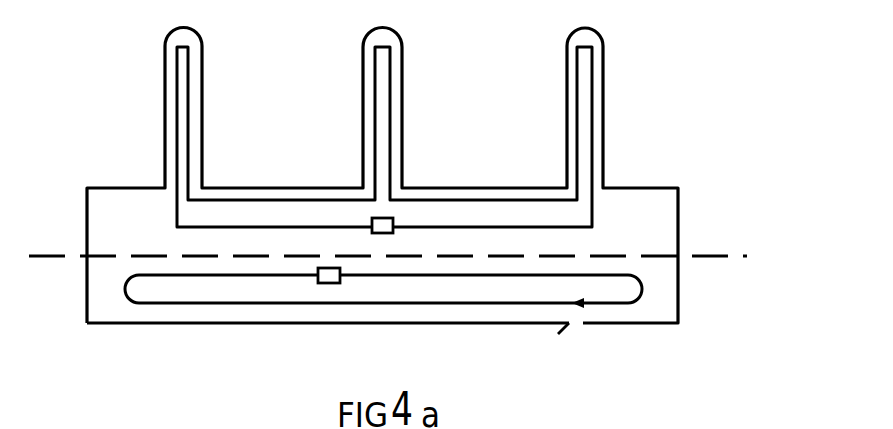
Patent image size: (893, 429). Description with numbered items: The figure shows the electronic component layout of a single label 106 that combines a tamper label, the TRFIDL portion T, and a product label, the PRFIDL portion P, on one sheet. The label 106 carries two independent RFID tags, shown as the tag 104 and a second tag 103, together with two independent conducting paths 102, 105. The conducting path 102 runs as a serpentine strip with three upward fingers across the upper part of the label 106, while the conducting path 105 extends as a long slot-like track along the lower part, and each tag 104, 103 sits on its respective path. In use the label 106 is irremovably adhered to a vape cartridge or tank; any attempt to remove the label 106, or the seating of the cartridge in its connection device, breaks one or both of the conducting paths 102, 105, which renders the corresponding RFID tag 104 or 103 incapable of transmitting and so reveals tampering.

The independent conducting path 102 is at (440, 197).
The feed point element 103 is at (382, 233).
The independent RFID tag 104 is at (327, 268).
The independent conducting path 105 is at (418, 302).
The label 106 is at (678, 227).
The TRFIDL tamper label T is at (107, 198).
The PRFIDL product label P is at (662, 300).